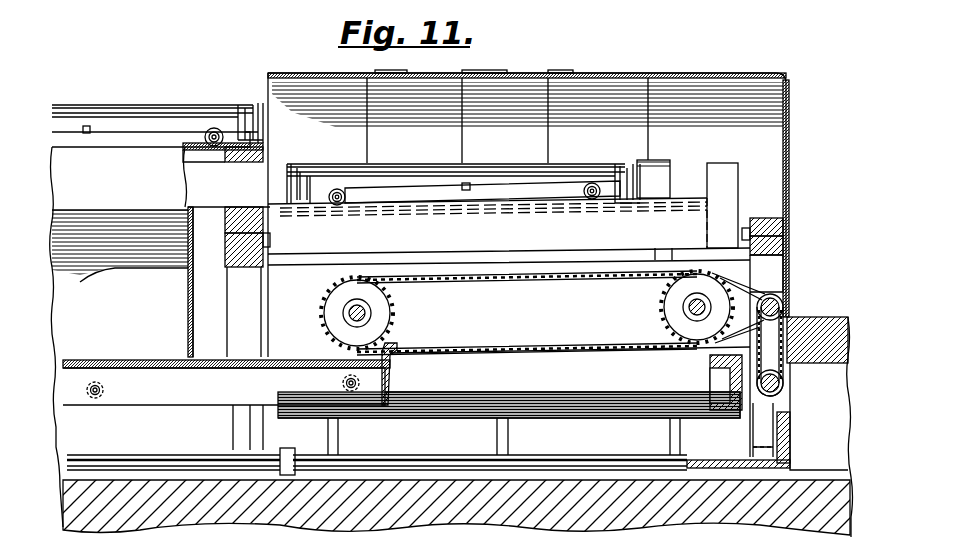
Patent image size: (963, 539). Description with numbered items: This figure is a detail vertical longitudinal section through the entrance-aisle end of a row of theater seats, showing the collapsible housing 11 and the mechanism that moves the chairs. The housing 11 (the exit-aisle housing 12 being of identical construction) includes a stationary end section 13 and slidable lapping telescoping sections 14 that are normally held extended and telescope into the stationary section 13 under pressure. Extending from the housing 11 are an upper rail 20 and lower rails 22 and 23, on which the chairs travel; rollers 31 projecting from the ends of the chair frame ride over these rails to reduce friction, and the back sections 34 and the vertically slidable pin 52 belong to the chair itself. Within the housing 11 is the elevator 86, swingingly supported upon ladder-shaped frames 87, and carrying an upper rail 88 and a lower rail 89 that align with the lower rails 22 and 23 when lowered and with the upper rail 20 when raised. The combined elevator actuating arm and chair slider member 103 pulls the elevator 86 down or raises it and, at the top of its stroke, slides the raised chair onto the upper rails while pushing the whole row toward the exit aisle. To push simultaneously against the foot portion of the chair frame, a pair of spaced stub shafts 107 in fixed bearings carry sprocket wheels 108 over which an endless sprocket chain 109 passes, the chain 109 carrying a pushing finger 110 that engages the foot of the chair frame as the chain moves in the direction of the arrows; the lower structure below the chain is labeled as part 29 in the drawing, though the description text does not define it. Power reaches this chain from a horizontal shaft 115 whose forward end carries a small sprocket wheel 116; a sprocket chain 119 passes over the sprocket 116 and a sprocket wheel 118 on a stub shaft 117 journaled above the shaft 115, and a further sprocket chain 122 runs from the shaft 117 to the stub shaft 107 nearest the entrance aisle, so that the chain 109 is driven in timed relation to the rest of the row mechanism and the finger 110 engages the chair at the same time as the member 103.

The collapsible housing 11 is at (700, 75).
The collapsible housing 12 is at (125, 88).
The stationary end section 13 is at (789, 90).
The telescoping sections 14 is at (490, 73).
The upper rail 20 is at (208, 145).
The lower rail 22 is at (205, 207).
The lower rail 23 is at (150, 450).
The base plate 29 is at (135, 358).
The rollers 31 is at (212, 150).
The back sections 34 is at (158, 104).
The vertically slidable pin 52 is at (90, 129).
The elevator 86 is at (720, 166).
The ladder shaped frames 87 is at (535, 455).
The upper rail of elevator 88 is at (509, 231).
The lower rail of elevator 89 is at (540, 392).
The combined elevator actuating arm and chair slider member 103 is at (655, 186).
The stub shafts 107 is at (364, 309).
The sprocket wheels 108 is at (375, 326).
The endless sprocket chain 109 is at (512, 283).
The pushing finger 110 is at (397, 355).
The horizontal shaft 115 is at (784, 392).
The small sprocket wheel 116 is at (784, 384).
The stub shaft 117 is at (778, 297).
The sprocket wheel 118 is at (783, 316).
The sprocket chain 119 is at (797, 329).
The sprocket chain 122 is at (752, 282).